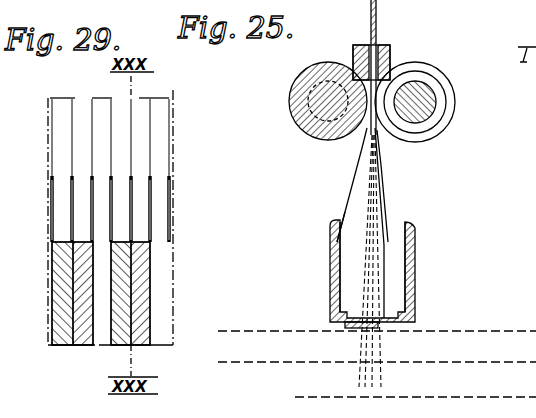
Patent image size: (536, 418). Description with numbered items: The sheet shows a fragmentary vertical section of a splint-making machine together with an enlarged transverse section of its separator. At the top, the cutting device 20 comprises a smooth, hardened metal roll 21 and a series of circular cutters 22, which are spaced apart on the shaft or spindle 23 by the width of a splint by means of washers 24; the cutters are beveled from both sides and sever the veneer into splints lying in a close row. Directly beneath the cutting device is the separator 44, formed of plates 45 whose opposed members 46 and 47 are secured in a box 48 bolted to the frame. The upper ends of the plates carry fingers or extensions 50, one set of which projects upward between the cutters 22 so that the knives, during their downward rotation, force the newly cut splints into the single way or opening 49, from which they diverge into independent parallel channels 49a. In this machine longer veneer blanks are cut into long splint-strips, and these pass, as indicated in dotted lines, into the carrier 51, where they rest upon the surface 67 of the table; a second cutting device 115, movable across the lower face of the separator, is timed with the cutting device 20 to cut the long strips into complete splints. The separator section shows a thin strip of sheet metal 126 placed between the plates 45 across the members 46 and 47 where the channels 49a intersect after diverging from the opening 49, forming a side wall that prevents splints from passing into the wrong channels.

In FIG. 25, the cutting device 20 is at (358, 149).
In FIG. 25, the roll 21 is at (290, 101).
In FIG. 25, the cutters 22 is at (455, 78).
In FIG. 25, the shaft or spindle 23 is at (428, 114).
In FIG. 25, the washers 24 is at (440, 90).
In FIG. 25, the separator 44 is at (351, 271).
In FIG. 29, the plates 45 is at (80, 337).
In FIG. 25, the member 46 is at (347, 292).
In FIG. 25, the member 47 is at (400, 302).
In FIG. 25, the box 48 is at (418, 246).
In FIG. 25, the single way, pass, or opening 49 is at (390, 158).
In FIG. 25, the channels 49a is at (385, 278).
In FIG. 25, the fingers or extensions 50 is at (325, 208).
In FIG. 25, the carrier 51 is at (499, 330).
In FIG. 25, the surface of the table 67 is at (450, 397).
In FIG. 25, the second cutting device 115 is at (352, 332).
In FIG. 29, the strip of sheet metal 126 is at (53, 214).